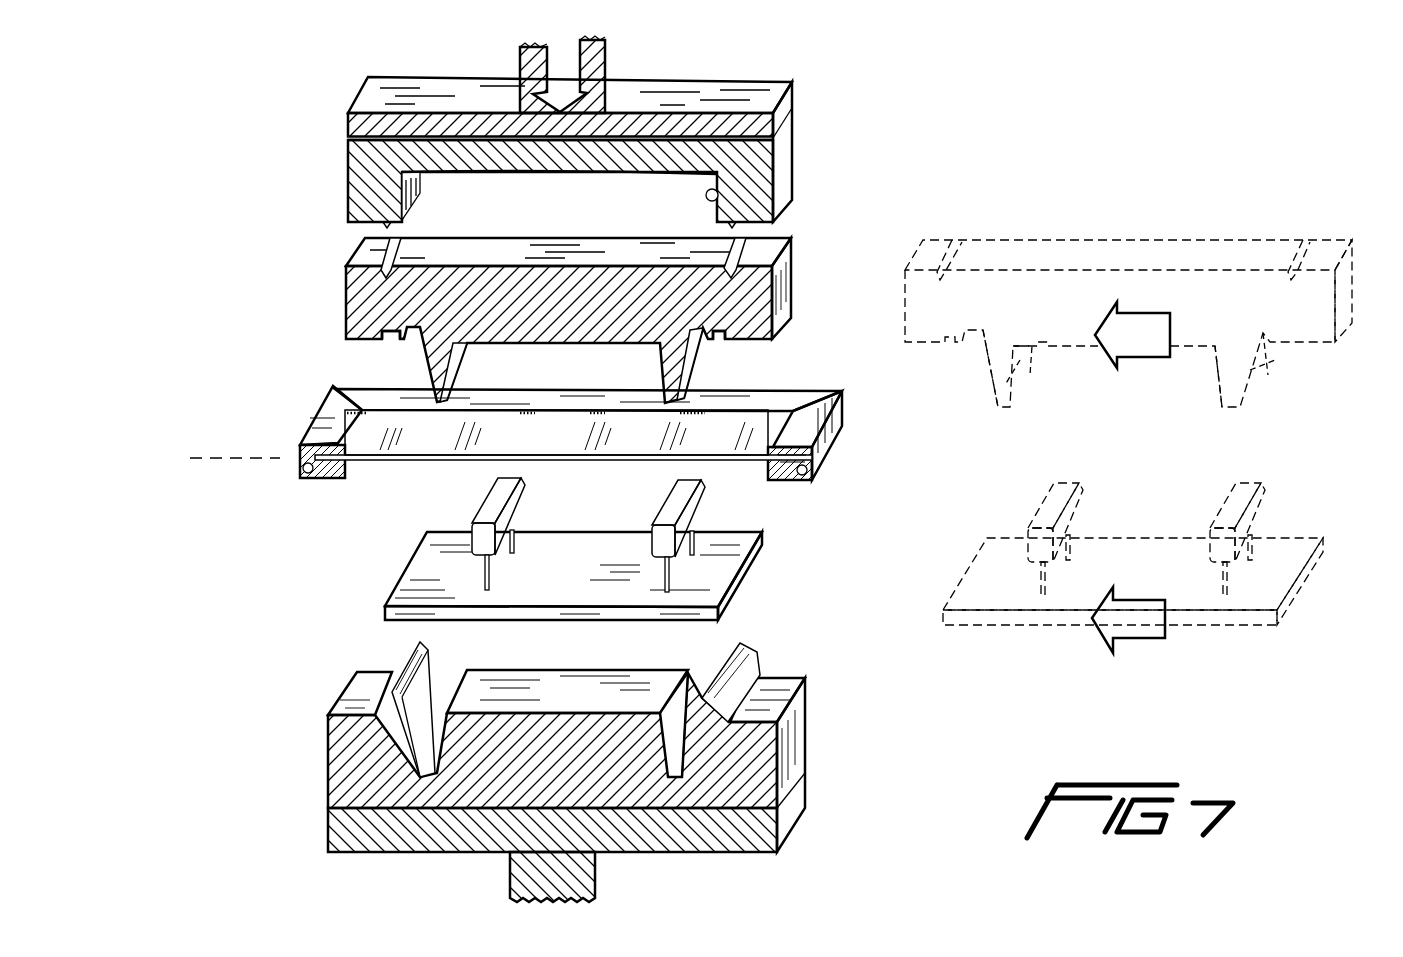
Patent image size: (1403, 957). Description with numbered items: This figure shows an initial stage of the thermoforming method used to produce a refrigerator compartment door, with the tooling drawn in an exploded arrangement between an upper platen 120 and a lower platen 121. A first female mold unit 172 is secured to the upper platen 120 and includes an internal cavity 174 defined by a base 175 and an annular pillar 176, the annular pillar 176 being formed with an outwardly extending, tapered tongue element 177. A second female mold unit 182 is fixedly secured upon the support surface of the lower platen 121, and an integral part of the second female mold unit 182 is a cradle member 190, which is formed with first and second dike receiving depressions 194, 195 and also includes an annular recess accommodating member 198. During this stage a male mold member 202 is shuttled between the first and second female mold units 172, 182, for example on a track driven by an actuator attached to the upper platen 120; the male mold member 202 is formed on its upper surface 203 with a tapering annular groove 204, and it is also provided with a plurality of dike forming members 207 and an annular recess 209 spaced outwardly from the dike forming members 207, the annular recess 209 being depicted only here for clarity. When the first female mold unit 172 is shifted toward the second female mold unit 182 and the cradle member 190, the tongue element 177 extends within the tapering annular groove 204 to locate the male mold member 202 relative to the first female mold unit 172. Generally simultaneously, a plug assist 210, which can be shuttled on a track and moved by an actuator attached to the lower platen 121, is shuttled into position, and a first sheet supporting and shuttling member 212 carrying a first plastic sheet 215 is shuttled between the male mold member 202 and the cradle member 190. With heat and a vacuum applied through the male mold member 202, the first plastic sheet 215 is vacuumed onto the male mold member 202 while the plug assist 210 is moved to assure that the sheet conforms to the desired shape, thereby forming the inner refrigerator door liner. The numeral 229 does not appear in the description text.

The upper platen 120 is at (795, 97).
The first female mold unit 172 is at (804, 138).
The internal cavity 174 is at (720, 198).
The base 175 is at (527, 157).
The annular pillar 176 is at (387, 187).
The tongue element 177 is at (374, 229).
The male mold member 202 is at (630, 250).
The upper surface 203 is at (568, 252).
The tapering annular groove 204 is at (770, 288).
The dike forming members 207 is at (468, 365).
The annular recess 209 is at (723, 338).
The bottom left notch 229 is at (392, 340).
The first sheet supporting and shuttling member 212 is at (312, 404).
The first plastic sheet 215 is at (432, 440).
The plug assist 210 is at (412, 585).
The first dike receiving depression 194 is at (425, 677).
The second dike receiving depression 195 is at (701, 693).
The annular recess accommodating member 198 is at (757, 658).
The second female mold unit 182 is at (817, 740).
The cradle member 190 is at (567, 719).
The lower platen 121 is at (790, 802).